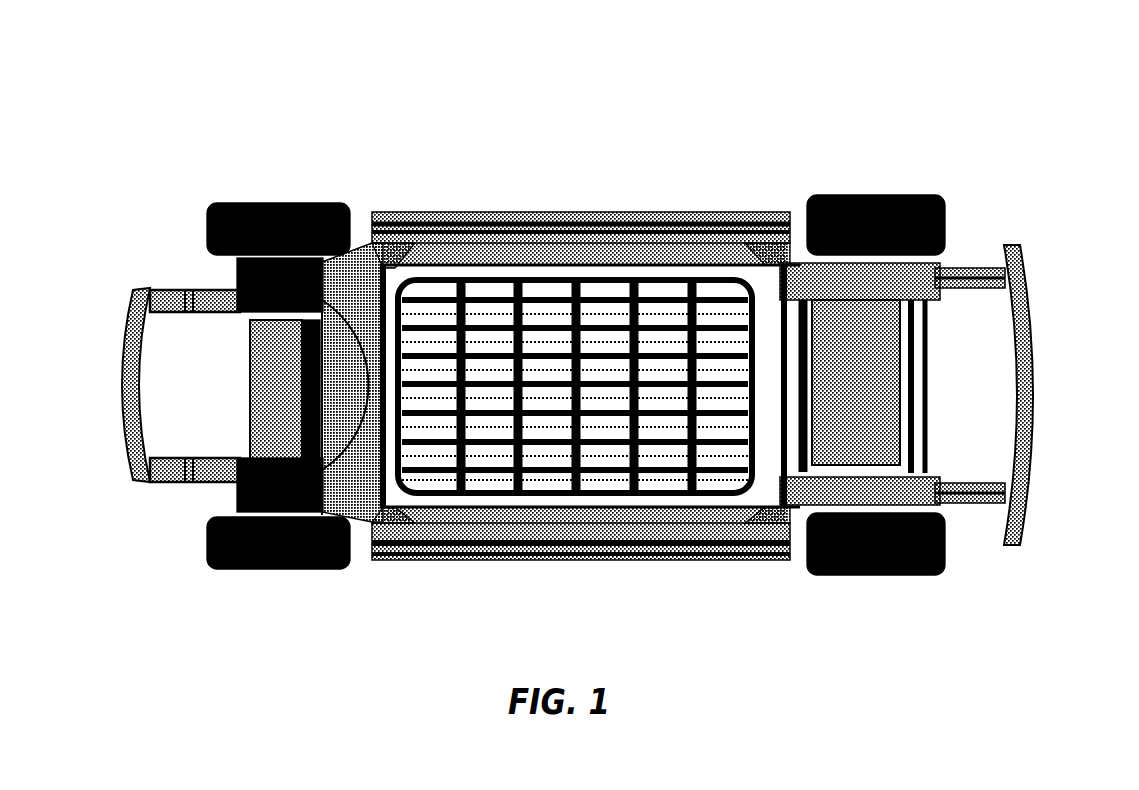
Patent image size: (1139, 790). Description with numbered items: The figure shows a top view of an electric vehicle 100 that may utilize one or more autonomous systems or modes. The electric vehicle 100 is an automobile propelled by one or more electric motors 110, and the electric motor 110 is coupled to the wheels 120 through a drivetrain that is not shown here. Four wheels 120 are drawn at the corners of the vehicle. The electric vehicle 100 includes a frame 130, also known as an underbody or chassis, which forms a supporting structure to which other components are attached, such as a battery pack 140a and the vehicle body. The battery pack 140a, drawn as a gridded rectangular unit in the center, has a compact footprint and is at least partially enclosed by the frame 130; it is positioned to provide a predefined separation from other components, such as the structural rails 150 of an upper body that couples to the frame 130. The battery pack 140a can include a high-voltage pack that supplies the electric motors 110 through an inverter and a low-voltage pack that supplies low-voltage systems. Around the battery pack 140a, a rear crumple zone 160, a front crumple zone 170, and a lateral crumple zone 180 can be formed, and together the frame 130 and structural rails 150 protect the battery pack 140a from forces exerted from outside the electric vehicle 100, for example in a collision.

The electric vehicle 100 is at (246, 94).
The electric motor 110 is at (903, 440).
The wheels 120 is at (286, 203).
The frame 130 is at (757, 265).
The battery pack 140a is at (590, 495).
The structural rails 150 is at (608, 212).
The rear crumple zone 160 is at (965, 328).
The front crumple zone 170 is at (238, 430).
The lateral crumple zone 180 is at (468, 258).